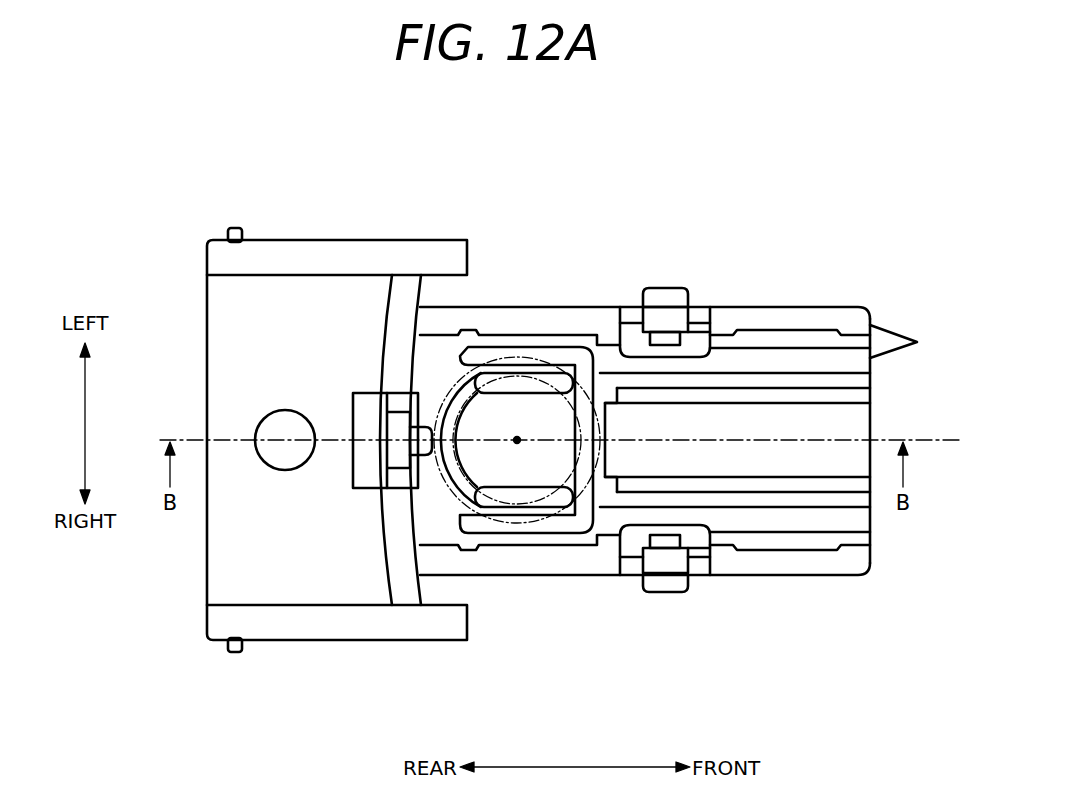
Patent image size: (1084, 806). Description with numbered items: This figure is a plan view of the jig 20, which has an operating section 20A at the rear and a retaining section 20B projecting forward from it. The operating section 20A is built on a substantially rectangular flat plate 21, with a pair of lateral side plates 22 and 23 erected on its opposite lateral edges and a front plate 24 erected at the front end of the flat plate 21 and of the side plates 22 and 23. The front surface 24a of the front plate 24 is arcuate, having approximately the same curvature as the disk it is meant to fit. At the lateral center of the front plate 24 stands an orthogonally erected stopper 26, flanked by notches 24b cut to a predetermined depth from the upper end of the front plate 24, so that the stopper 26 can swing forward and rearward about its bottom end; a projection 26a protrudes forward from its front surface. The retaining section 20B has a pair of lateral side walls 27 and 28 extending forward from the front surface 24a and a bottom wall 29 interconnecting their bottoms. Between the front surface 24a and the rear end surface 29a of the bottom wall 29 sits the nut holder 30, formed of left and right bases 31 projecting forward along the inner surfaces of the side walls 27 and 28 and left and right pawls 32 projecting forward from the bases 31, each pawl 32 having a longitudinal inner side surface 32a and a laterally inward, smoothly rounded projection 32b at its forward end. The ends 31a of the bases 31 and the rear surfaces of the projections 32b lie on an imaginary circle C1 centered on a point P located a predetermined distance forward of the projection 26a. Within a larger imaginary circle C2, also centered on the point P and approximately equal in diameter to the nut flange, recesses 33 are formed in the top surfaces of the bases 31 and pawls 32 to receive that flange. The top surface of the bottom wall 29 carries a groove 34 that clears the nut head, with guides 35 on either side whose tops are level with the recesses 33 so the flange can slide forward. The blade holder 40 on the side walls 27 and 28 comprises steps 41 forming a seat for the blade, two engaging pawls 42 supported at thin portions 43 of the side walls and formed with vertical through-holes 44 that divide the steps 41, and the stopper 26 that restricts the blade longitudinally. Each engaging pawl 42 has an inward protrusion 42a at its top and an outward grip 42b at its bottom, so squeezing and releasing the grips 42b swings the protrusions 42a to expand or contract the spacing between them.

The jig 20 is at (741, 194).
The operating section 20A is at (341, 233).
The retaining section 20B is at (809, 300).
The flat plate 21 is at (230, 563).
The side plate 22 is at (300, 240).
The side plate 23 is at (278, 642).
The front plate 24 is at (412, 287).
The front surface of the front plate 24a is at (421, 330).
The notches 24b is at (392, 407).
The stopper 26 is at (390, 393).
The projection 26a is at (398, 490).
The side wall 27 is at (748, 307).
The side wall 28 is at (782, 577).
The bottom wall 29 is at (875, 430).
The rear end surface of the bottom wall 29a is at (588, 348).
The nut holder 30 is at (542, 548).
The bases 31 is at (440, 520).
The ends of the bases 31a is at (468, 390).
The pawls 32 is at (557, 372).
The inner side surface 32a is at (528, 490).
The projections 32b is at (617, 443).
The recesses 33 is at (448, 540).
The groove 34 is at (852, 428).
The guides 35 is at (828, 367).
The blade holder 40 is at (880, 545).
The steps 41 is at (770, 332).
The engaging pawls 42 is at (683, 307).
The protrusions 42a is at (668, 540).
The grips 42b is at (665, 288).
The thin portions 43 is at (695, 588).
The through-holes 44 is at (697, 337).
The point P is at (527, 431).
The imaginary circle C1 is at (466, 524).
The imaginary circle C2 is at (511, 542).